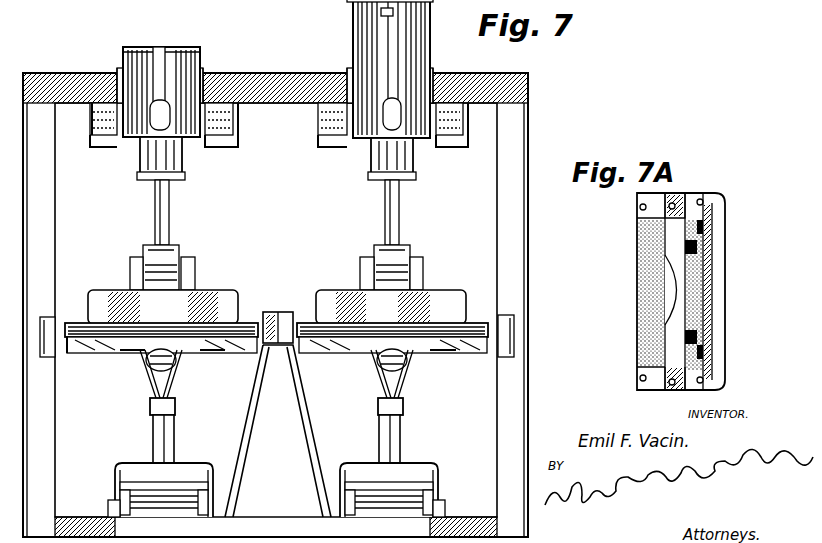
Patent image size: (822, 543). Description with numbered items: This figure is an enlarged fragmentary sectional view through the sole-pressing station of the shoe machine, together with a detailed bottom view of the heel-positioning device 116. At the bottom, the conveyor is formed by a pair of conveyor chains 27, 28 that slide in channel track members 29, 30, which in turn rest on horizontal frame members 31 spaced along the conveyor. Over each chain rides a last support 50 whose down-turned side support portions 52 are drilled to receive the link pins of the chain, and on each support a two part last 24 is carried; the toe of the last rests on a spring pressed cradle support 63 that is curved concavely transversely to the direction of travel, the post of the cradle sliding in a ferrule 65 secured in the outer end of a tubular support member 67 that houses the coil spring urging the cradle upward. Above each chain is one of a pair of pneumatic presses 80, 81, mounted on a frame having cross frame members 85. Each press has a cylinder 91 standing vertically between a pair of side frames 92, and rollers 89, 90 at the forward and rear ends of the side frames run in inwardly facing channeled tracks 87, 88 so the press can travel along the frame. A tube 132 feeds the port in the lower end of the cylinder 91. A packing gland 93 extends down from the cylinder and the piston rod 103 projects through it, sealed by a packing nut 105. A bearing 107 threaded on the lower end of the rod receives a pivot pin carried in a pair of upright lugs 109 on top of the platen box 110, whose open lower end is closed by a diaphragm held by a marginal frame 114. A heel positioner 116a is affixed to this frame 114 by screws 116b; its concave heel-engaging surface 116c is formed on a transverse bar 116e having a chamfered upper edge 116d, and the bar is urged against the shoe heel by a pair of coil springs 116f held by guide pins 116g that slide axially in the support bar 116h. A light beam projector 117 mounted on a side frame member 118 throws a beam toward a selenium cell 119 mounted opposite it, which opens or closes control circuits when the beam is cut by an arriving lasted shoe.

In FIG. 7, the pneumatic press 80 is at (122, 50).
In FIG. 7, the pneumatic press 81 is at (431, 52).
In FIG. 7, the cross frame member 85 is at (265, 77).
In FIG. 7, the channeled track 87 is at (94, 148).
In FIG. 7, the channeled track 88 is at (223, 146).
In FIG. 7, the roller 89 is at (91, 141).
In FIG. 7, the roller 90 is at (236, 122).
In FIG. 7, the cylinder 91 is at (354, 30).
In FIG. 7, the side frame 92 is at (355, 70).
In FIG. 7, the packing gland 93 is at (140, 158).
In FIG. 7, the piston rod 103 is at (156, 213).
In FIG. 7, the packing nut 105 is at (139, 178).
In FIG. 7, the bearing 107 is at (147, 250).
In FIG. 7, the upright lug 109 is at (190, 257).
In FIG. 7, the platen box 110 is at (218, 290).
In FIG. 7A, the marginal frame 114 is at (636, 206).
In FIG. 7, the carrier plate 116 is at (343, 355).
In FIG. 7, the heel positioner 116a is at (135, 353).
In FIG. 7A, the heel positioner 116a is at (702, 196).
In FIG. 7A, the screw 116b is at (722, 206).
In FIG. 7A, the concave heel-engaging surface 116c is at (674, 290).
In FIG. 7A, the chamfered upper edge 116d is at (665, 320).
In FIG. 7, the transverse bar 116e is at (222, 353).
In FIG. 7A, the transverse bar 116e is at (665, 257).
In FIG. 7A, the coil spring 116f is at (703, 238).
In FIG. 7A, the guide pin 116g is at (712, 256).
In FIG. 7A, the support bar 116h is at (704, 289).
In FIG. 7, the light beam projector 117 is at (46, 316).
In FIG. 7, the side frame member 118 is at (88, 353).
In FIG. 7, the selenium cell 119 is at (284, 312).
In FIG. 7, the tube 132 is at (168, 55).
In FIG. 7, the two part last 24 is at (175, 390).
In FIG. 7, the conveyor chain 27 is at (120, 486).
In FIG. 7, the conveyor chain 28 is at (436, 476).
In FIG. 7, the channel track member 29 is at (108, 508).
In FIG. 7, the channel track member 30 is at (446, 506).
In FIG. 7, the horizontal frame member 31 is at (289, 517).
In FIG. 7, the bracket 50 is at (117, 471).
In FIG. 7, the side support portion 52 is at (120, 494).
In FIG. 7, the cradle support 63 is at (146, 362).
In FIG. 7, the ferrule 65 is at (150, 405).
In FIG. 7, the tubular support member 67 is at (153, 436).